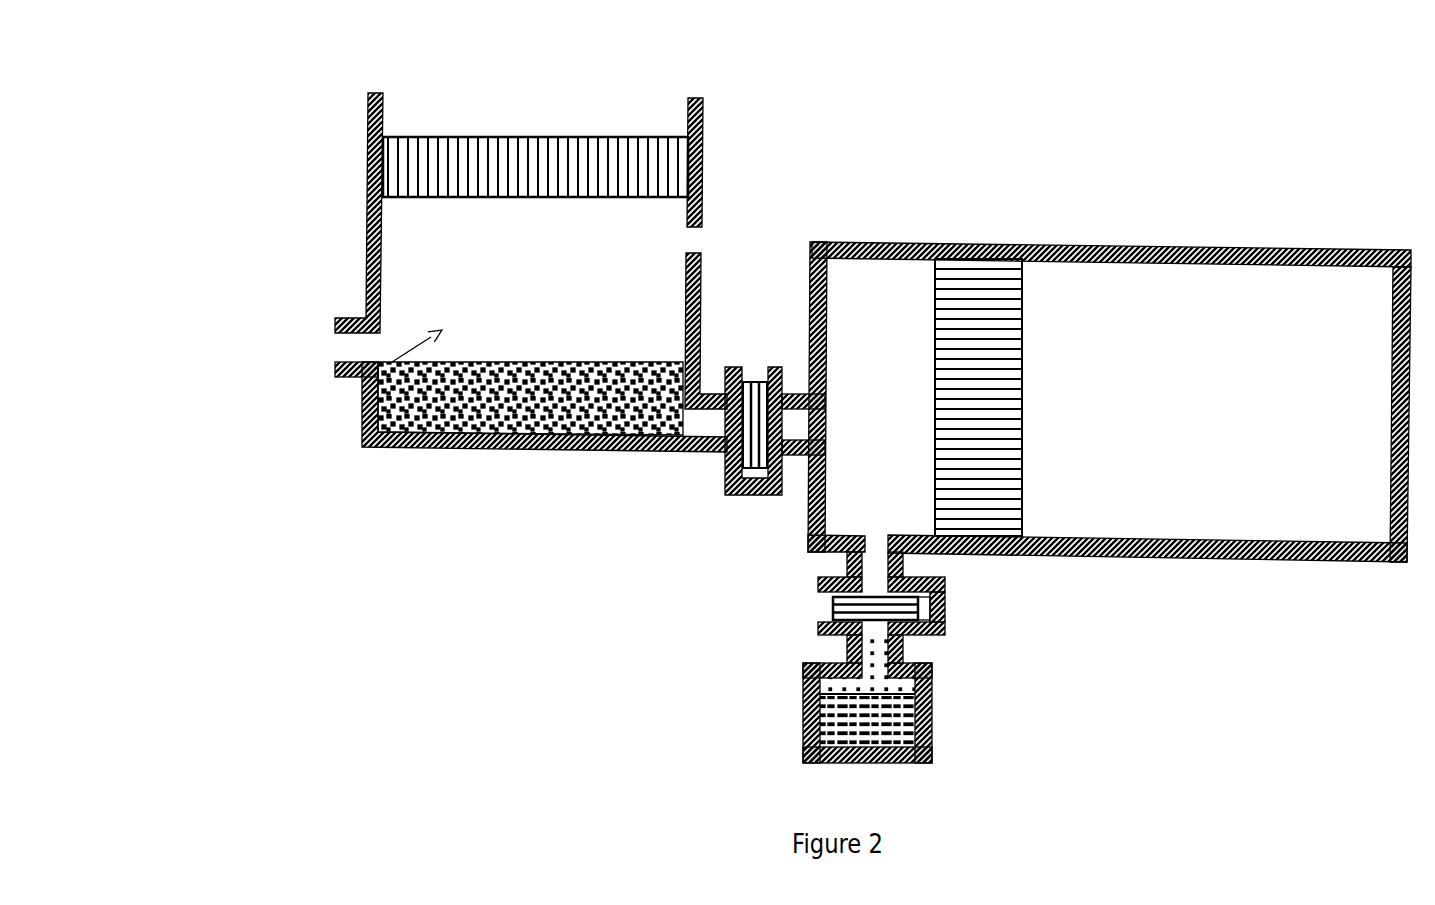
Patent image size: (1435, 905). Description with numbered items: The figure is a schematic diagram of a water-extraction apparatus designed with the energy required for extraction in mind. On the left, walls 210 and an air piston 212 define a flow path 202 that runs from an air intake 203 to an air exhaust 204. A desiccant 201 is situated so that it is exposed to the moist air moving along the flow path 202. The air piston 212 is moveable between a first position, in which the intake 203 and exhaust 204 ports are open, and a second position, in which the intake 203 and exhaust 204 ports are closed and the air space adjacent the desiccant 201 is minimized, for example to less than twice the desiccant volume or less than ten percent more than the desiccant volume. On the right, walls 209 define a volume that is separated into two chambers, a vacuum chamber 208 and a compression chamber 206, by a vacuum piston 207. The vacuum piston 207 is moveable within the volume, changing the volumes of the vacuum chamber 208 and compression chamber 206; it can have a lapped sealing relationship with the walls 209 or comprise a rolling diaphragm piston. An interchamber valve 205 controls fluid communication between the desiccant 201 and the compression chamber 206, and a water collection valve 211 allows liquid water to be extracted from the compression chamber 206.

The desiccant 201 is at (463, 279).
The flow path 202 is at (456, 422).
The air intake 203 is at (276, 325).
The air exhaust 204 is at (770, 253).
The interchamber valve 205 is at (713, 470).
The compression chamber 206 is at (922, 349).
The vacuum piston 207 is at (1054, 339).
The vacuum chamber 208 is at (1216, 446).
The walls 209 is at (1111, 346).
The walls 210 is at (313, 213).
The water collection valve 211 is at (938, 607).
The air piston 212 is at (524, 111).